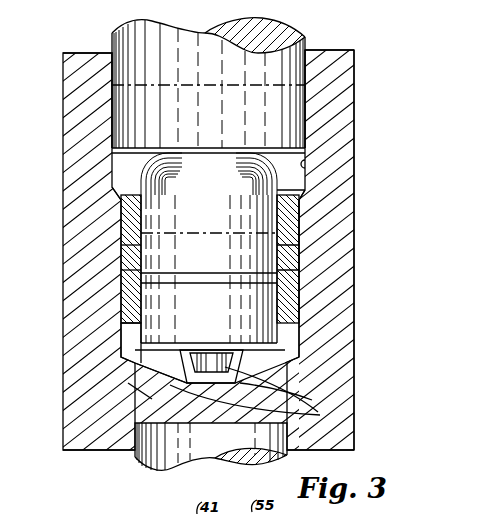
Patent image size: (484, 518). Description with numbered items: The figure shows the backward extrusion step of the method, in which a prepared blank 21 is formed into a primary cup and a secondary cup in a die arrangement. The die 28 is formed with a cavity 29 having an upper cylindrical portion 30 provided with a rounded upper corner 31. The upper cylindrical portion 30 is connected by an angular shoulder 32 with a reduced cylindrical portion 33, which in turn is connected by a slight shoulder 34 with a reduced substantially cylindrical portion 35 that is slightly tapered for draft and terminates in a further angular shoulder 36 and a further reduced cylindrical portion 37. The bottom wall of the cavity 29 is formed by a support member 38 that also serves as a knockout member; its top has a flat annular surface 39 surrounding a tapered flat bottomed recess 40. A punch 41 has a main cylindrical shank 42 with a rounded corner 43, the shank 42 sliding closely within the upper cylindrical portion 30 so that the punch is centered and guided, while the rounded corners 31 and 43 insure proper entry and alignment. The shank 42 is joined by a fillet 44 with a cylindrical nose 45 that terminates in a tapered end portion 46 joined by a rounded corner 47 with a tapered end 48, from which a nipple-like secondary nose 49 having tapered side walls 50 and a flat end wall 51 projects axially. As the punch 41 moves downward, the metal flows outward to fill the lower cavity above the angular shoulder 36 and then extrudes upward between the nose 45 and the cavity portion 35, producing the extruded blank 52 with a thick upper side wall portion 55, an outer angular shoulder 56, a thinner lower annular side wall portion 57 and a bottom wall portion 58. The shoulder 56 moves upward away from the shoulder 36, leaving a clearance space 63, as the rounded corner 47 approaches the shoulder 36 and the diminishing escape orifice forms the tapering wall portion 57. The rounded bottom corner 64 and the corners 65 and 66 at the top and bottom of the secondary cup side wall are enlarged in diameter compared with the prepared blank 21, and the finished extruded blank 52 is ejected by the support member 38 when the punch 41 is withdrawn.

The prepared blank 21 is at (345, 268).
The die 28 is at (345, 77).
The die cavity 29 is at (312, 134).
The upper cylindrical portion 30 is at (306, 163).
The rounded upper corner 31 is at (340, 52).
The angular shoulder 32 is at (299, 192).
The reduced cylindrical portion 33 is at (300, 217).
The slight shoulder 34 is at (300, 246).
The reduced substantially cylindrical portion 35 is at (297, 290).
The angular shoulder 36 is at (301, 345).
The reduced cylindrical portion 37 is at (293, 400).
The support member 38 is at (159, 464).
The flat annular surface 39 is at (297, 382).
The tapered flat bottomed recess 40 is at (289, 432).
The punch 41 is at (290, 36).
The main cylindrical shank 42 is at (119, 67).
The rounded corner 43 is at (126, 133).
The fillet 44 is at (141, 180).
The cylindrical nose 45 is at (141, 190).
The tapered end portion 46 is at (150, 318).
The rounded corner 47 is at (148, 341).
The tapered end 48 is at (135, 370).
The secondary nose 49 is at (210, 357).
The tapered side walls 50 is at (196, 350).
The flat end wall 51 is at (135, 406).
The extruded blank 52 is at (131, 228).
The thick upper side wall portion 55 is at (130, 250).
The outer angular shoulder 56 is at (131, 276).
The thinner lower annular side wall portion 57 is at (138, 358).
The bottom wall portion 58 is at (135, 390).
The clearance space 63 is at (290, 324).
The rounded bottom corner 64 is at (306, 372).
The corner 65 is at (300, 416).
The corner 66 is at (72, 448).